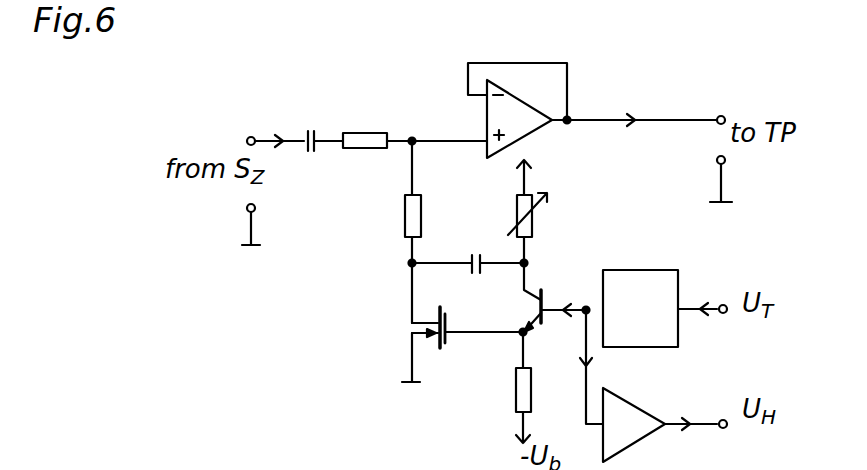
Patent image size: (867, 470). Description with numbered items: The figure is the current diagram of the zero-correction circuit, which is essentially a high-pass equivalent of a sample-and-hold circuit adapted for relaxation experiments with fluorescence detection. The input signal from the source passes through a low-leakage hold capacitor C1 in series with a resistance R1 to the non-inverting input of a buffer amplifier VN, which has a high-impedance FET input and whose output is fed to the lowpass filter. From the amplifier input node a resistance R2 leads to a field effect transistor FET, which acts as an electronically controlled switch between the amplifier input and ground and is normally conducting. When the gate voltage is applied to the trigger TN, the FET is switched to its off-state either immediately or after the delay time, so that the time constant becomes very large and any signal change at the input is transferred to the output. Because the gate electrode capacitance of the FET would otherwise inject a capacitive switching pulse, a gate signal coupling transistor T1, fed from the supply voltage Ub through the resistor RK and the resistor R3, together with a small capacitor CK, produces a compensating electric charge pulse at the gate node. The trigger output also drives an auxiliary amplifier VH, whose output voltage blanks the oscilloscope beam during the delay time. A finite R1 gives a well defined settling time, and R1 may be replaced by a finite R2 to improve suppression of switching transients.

The hold capacitor C1 is at (318, 117).
The resistance R1 is at (415, 116).
The buffer amplifier VN is at (592, 88).
The resistance R2 is at (431, 232).
The small capacitor CK is at (468, 282).
The supply voltage Ub is at (552, 167).
The resistor RK is at (540, 228).
The gate signal coupling transistor T1 is at (555, 290).
The field effect transistor FET is at (430, 344).
The resistor R3 is at (542, 387).
The trigger TN is at (660, 289).
The auxiliary amplifier VH is at (660, 417).